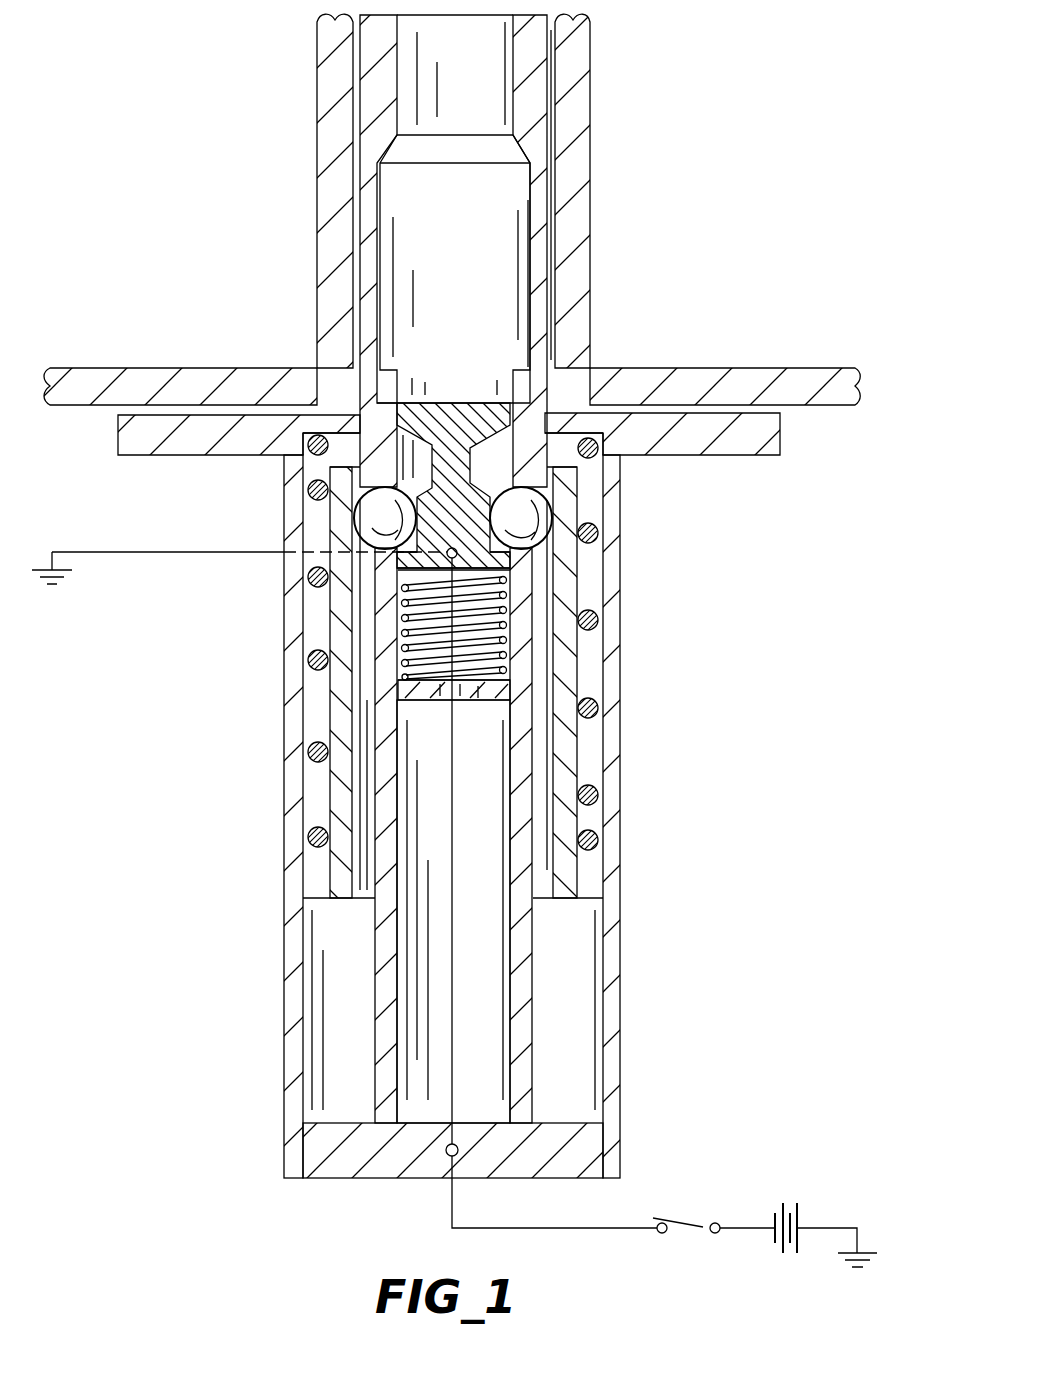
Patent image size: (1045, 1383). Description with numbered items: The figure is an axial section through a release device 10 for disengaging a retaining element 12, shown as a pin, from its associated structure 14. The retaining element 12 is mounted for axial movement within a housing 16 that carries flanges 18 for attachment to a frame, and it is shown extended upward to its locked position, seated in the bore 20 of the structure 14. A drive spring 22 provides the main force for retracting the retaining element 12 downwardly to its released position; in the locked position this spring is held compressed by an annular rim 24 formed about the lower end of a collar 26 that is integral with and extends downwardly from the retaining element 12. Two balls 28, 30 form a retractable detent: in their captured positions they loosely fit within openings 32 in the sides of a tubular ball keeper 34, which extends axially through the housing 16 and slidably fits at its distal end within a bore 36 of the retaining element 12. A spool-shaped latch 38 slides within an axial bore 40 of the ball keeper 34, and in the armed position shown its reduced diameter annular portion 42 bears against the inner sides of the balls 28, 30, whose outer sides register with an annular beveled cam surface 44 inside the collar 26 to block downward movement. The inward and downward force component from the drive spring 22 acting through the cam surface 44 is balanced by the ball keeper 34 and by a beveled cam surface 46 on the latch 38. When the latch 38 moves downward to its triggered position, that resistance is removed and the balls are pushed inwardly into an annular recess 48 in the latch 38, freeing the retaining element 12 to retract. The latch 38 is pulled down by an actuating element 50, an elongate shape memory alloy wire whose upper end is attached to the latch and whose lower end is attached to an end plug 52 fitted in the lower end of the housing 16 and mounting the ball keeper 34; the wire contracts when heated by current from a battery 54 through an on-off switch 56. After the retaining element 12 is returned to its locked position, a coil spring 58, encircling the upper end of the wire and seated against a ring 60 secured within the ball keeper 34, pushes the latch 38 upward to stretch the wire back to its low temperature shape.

The release device 10 is at (247, 953).
The retaining element 12 is at (380, 86).
The associated structure 14 is at (150, 392).
The housing 16 is at (612, 1015).
The flanges 18 is at (730, 432).
The bore 20 is at (548, 117).
The drive spring 22 is at (305, 840).
The annular rim 24 is at (580, 880).
The collar 26 is at (343, 718).
The ball 28 is at (360, 507).
The ball 30 is at (547, 498).
The openings 32 is at (512, 560).
The ball keeper 34 is at (522, 762).
The bore 36 is at (522, 262).
The latch 38 is at (462, 420).
The axial bore 40 is at (398, 388).
The reduced diameter annular portion 42 is at (547, 538).
The beveled cam surface 44 is at (390, 480).
The beveled cam surface 46 is at (378, 528).
The annular recess 48 is at (562, 352).
The actuating element 50 is at (437, 1010).
The end plug 52 is at (405, 1150).
The battery 54 is at (772, 1212).
The on-off switch 56 is at (687, 1218).
The coil spring 58 is at (404, 618).
The ring 60 is at (500, 690).